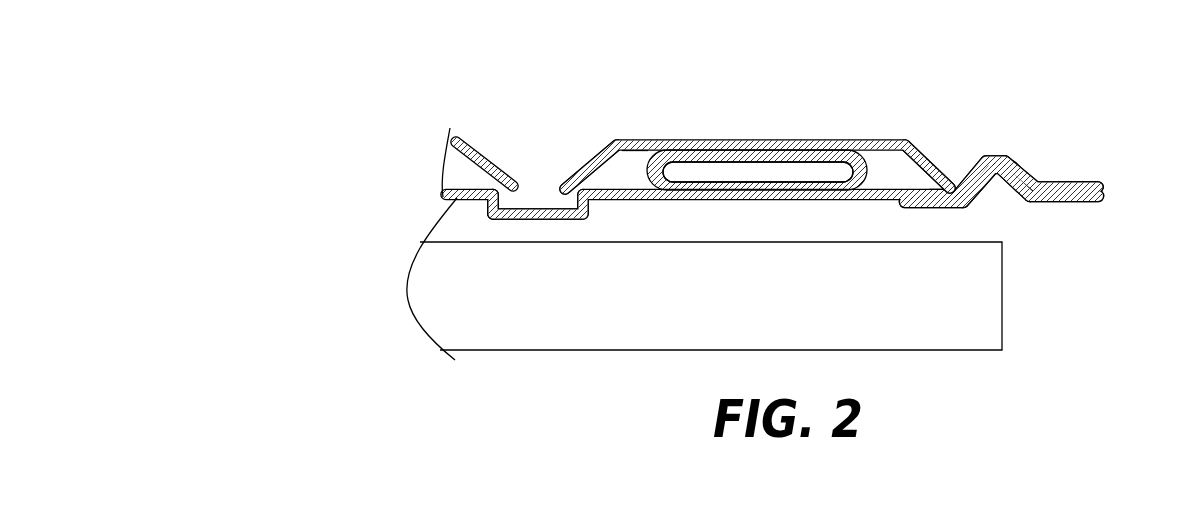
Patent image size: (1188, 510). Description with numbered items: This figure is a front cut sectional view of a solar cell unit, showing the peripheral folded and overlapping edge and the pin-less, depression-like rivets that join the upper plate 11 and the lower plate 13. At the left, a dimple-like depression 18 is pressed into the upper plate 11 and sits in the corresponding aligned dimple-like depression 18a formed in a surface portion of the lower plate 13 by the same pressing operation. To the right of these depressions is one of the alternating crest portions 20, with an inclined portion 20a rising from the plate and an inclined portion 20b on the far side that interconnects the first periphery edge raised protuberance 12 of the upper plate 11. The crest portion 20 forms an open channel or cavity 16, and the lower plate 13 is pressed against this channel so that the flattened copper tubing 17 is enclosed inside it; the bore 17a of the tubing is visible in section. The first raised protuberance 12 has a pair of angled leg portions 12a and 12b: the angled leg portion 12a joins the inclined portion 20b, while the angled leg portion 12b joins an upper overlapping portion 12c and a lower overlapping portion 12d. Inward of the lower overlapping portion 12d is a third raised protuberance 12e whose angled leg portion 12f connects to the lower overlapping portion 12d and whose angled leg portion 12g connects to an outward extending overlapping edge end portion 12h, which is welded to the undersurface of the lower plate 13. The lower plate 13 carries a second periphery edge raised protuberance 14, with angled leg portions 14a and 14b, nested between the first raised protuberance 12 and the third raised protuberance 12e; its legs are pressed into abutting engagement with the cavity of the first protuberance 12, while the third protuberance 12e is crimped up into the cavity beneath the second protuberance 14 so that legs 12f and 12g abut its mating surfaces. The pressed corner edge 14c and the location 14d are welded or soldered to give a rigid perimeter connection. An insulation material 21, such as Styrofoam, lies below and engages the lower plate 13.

The upper plate 11 is at (513, 172).
The first periphery edge raised protuberance 12 is at (994, 158).
The angled leg portion 12a is at (961, 180).
The angled leg portion 12b is at (1034, 180).
The upper overlapping portion 12c is at (1080, 183).
The lower overlapping portion 12d is at (1060, 206).
The third raised protuberance 12e is at (995, 202).
The angled leg portion 12f is at (1013, 204).
The angled leg portion 12g is at (977, 202).
The outward extending overlapping edge end portion 12h is at (943, 207).
The lower plate 13 is at (455, 198).
The second periphery edge raised protuberance 14 is at (1011, 168).
The angled leg portion 14a is at (969, 177).
The angled leg portion 14b is at (1043, 181).
The pressed corner edge 14c is at (1053, 206).
The weld location element 14d is at (915, 203).
The open channel or cavity 16 is at (638, 158).
The flattened copper tubing 17 is at (688, 150).
The bore of tube 17 17a is at (717, 163).
The dimple-like depression 18 is at (540, 200).
The dimple-like depression 18a is at (499, 203).
The alternating crest portion 20 is at (752, 140).
The inclined portion 20a is at (598, 148).
The inclined portion 20b is at (922, 152).
The insulation material 21 is at (912, 308).